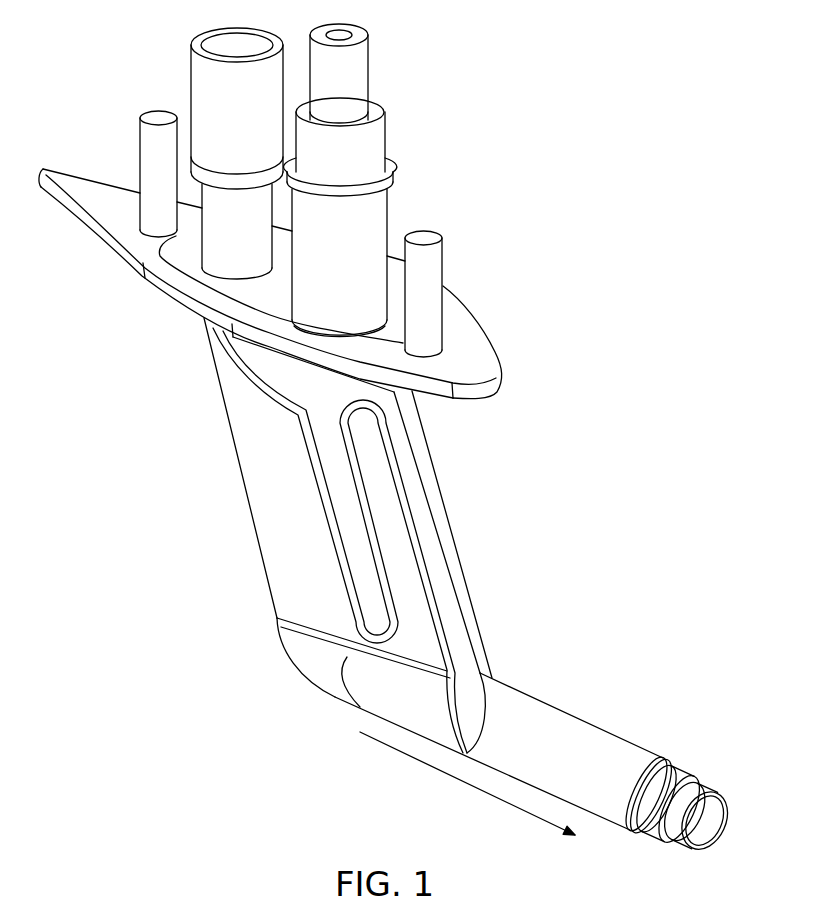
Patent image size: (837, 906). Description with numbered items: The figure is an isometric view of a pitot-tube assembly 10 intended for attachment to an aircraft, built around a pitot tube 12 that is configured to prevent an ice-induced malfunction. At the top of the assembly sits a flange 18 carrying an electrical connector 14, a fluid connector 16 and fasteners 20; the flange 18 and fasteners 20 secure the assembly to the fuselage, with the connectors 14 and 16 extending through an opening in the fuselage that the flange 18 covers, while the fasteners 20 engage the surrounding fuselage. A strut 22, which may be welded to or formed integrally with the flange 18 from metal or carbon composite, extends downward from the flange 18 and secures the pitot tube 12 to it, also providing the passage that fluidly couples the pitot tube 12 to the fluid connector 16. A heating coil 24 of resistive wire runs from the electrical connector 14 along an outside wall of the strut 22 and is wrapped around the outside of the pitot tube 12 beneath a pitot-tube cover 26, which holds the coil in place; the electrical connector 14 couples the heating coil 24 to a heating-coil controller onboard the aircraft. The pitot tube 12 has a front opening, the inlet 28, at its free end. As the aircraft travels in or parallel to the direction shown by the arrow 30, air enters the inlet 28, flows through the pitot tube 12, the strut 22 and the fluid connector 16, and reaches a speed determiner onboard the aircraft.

The pitot-tube assembly 10 is at (267, 700).
The pitot tube 12 is at (720, 783).
The electrical connector 14 is at (191, 74).
The fluid connector 16 is at (368, 61).
The flange 18 is at (470, 357).
The fasteners 20 is at (140, 117).
The strut 22 is at (357, 535).
The heating coil 24 is at (315, 486).
The pitot-tube cover 26 is at (553, 705).
The inlet 28 is at (740, 830).
The arrow 30 is at (467, 790).